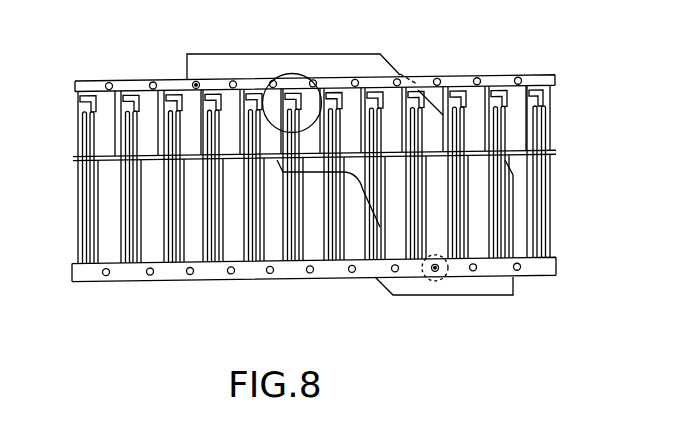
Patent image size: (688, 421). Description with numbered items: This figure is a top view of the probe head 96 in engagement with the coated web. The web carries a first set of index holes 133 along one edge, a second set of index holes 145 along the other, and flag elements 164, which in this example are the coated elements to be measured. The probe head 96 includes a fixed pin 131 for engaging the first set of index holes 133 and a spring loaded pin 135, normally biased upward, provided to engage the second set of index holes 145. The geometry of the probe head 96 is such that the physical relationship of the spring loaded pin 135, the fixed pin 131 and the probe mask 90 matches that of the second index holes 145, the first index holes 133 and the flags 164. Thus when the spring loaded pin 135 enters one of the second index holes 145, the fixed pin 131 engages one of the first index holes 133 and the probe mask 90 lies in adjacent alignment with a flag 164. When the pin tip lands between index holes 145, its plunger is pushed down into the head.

The first set of index holes 133 is at (106, 83).
The fixed pin 131 is at (198, 82).
The flag elements 164 is at (127, 95).
The probe mask 90 is at (322, 98).
The probe head 96 is at (432, 117).
The second set of index holes 145 is at (188, 276).
The spring loaded pin 135 is at (434, 272).